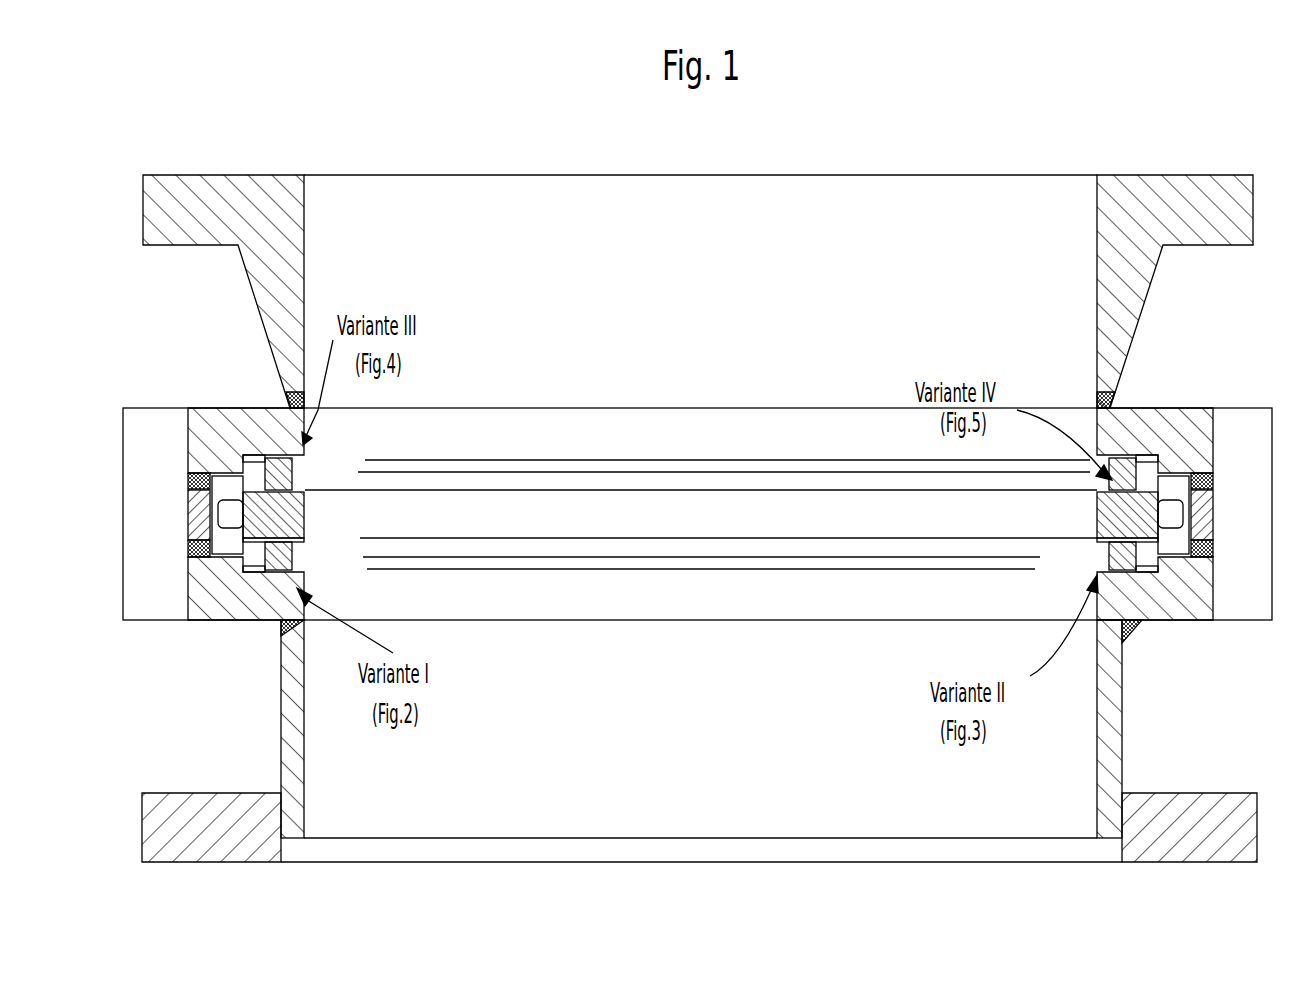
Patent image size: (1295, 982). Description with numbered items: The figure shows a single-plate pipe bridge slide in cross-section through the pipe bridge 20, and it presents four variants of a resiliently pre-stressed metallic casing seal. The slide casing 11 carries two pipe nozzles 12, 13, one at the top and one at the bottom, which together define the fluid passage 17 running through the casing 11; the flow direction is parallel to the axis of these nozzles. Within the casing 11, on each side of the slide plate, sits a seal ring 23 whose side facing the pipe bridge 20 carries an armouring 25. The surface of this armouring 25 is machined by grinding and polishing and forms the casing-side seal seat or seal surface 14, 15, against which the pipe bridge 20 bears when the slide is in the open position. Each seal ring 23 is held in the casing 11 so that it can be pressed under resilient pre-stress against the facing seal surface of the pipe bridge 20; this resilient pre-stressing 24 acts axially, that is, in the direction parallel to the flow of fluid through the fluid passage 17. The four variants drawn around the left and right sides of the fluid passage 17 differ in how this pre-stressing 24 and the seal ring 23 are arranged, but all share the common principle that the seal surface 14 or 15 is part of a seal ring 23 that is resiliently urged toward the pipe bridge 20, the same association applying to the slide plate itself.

The slide casing 11 is at (1185, 610).
The pipe nozzle 12 is at (290, 735).
The pipe nozzle 13 is at (285, 268).
The casing seal seat or seal surface 14 is at (285, 536).
The casing seal seat or seal surface 15 is at (304, 500).
The fluid passage 17 is at (689, 315).
The pipe bridge 20 is at (1195, 520).
The seal ring 23 is at (198, 472).
The resilient pre-stressing 24 is at (266, 450).
The armouring 25 is at (292, 468).